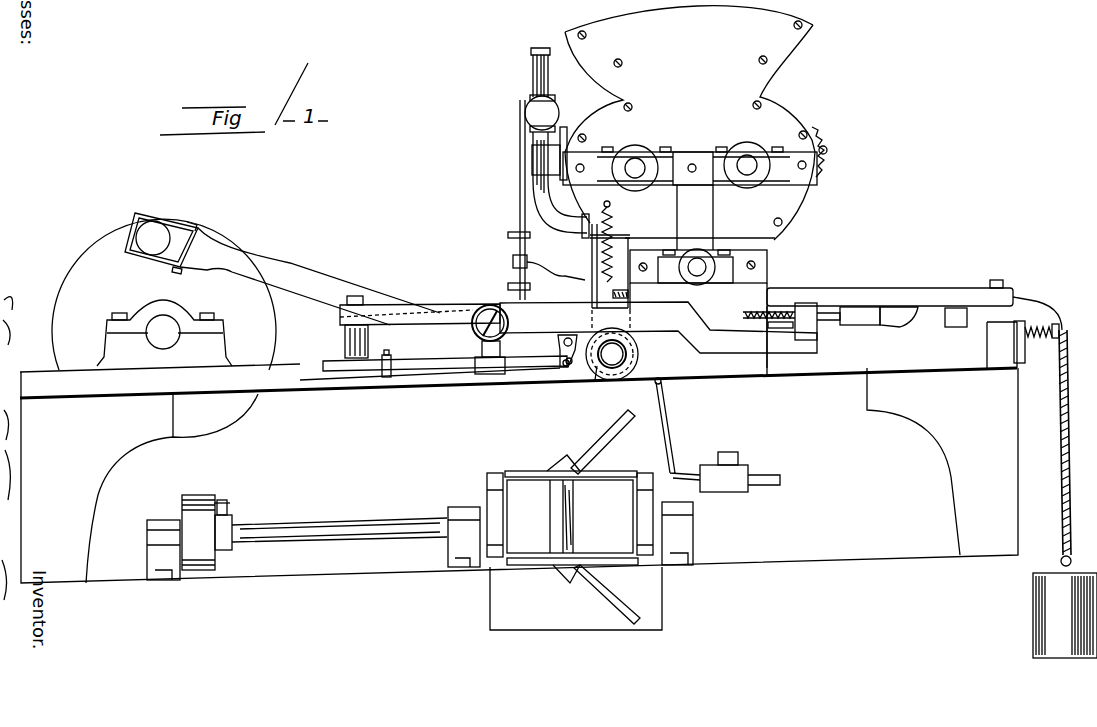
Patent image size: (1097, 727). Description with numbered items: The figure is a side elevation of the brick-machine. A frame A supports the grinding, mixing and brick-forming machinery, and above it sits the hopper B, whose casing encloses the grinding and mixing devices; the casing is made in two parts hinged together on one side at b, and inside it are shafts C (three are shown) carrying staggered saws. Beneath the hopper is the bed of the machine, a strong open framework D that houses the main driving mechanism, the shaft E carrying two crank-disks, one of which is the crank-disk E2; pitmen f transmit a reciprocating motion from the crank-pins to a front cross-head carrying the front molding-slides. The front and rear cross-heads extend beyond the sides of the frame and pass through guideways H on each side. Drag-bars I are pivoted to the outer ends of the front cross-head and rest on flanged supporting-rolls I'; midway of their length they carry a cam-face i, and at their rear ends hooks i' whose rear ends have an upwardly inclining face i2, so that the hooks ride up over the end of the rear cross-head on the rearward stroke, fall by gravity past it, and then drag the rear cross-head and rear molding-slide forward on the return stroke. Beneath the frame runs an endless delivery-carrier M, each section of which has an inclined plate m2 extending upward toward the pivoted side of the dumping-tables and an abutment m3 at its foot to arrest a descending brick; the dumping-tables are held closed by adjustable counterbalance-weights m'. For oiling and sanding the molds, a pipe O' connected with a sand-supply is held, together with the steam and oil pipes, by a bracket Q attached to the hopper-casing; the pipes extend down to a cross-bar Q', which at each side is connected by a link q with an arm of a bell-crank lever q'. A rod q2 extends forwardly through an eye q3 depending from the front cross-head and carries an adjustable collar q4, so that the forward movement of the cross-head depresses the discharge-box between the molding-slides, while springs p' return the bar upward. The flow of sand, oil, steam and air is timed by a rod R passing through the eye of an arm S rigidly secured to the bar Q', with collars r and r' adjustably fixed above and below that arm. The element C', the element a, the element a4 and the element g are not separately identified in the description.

The frame A is at (28, 464).
The hopper B is at (690, 123).
The hinge b is at (828, 147).
The shafts C is at (698, 313).
The crank bearings C' is at (690, 196).
The open framework D is at (430, 390).
The shaft E is at (158, 345).
The crank-disk E2 is at (164, 291).
The pitmen f is at (312, 290).
The guideways H is at (928, 292).
The drag-bars I is at (424, 313).
The flanged supporting-rolls I' is at (612, 363).
The cam-face i is at (658, 331).
The hooks i' is at (860, 333).
The inclining face i2 is at (905, 328).
The stop block a is at (956, 330).
The weight a4 is at (1036, 612).
The cord g is at (1042, 431).
The endless delivery-carrier M is at (532, 568).
The counterbalance-weights m' is at (717, 447).
The inclined plate m2 is at (617, 612).
The abutment m3 is at (560, 600).
The sand-supply pipe O' is at (541, 143).
The springs p' is at (625, 241).
The bracket Q is at (528, 153).
The cross-bar Q' is at (585, 266).
The link q is at (562, 340).
The bell-crank lever q' is at (582, 389).
The rod q2 is at (426, 373).
The eye q3 is at (488, 378).
The adjustable collar q4 is at (386, 378).
The rod R is at (515, 230).
The collar r is at (507, 239).
The collar r' is at (506, 279).
The arm S is at (549, 261).